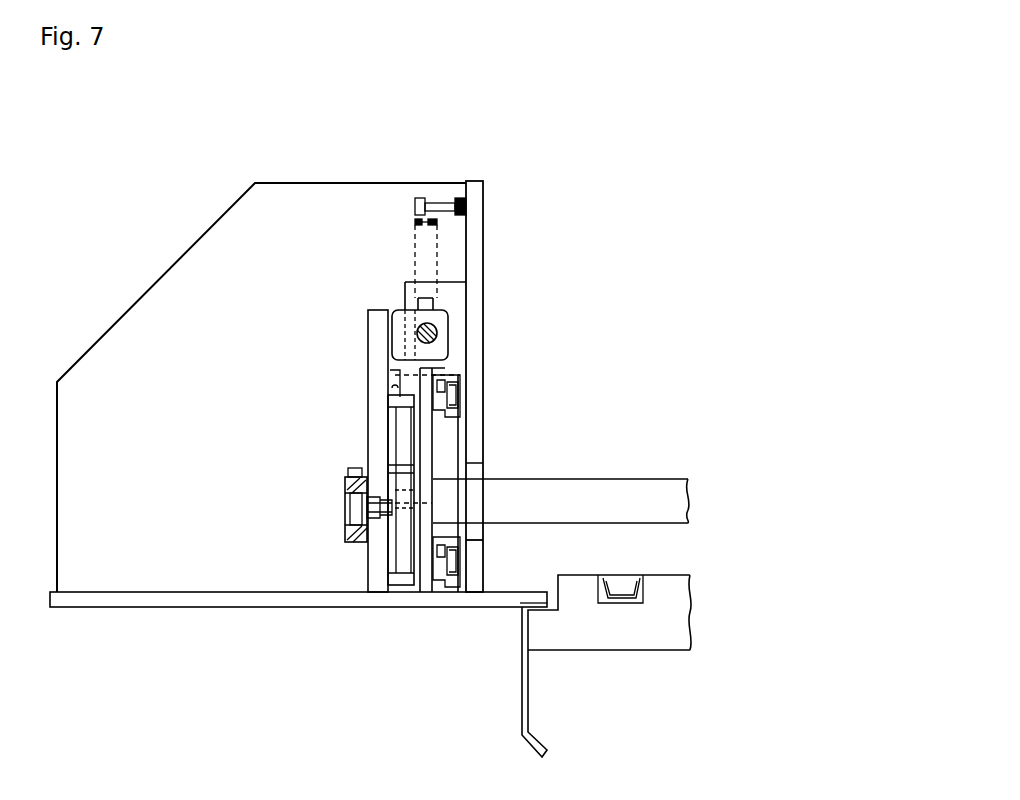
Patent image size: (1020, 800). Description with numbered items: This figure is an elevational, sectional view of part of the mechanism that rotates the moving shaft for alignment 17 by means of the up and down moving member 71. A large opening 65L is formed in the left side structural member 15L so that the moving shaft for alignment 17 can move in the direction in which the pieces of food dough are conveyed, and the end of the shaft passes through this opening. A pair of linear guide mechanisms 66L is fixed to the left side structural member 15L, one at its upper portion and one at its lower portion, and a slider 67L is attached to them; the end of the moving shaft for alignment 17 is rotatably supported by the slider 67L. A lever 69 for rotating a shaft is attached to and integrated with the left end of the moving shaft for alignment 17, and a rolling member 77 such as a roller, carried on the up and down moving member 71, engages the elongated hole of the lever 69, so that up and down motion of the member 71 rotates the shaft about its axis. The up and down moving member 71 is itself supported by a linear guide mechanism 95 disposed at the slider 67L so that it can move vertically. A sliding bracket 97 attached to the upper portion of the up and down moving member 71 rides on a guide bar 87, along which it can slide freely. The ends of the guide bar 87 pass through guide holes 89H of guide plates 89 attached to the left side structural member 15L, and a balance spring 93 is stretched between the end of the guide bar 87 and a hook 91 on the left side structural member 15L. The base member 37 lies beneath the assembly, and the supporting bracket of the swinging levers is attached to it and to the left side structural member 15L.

The left side structural member 15L is at (484, 210).
The moving shaft for alignment 17 is at (638, 496).
The base member 37 is at (297, 604).
The large opening 65L is at (470, 542).
The linear guide mechanisms 66L is at (448, 420).
The slider 67L is at (425, 596).
The lever for rotating a shaft 69 is at (343, 487).
The up and down moving member 71 is at (376, 356).
The rolling member 77 is at (347, 510).
The guide bar 87 is at (438, 333).
The guide plate 89 is at (455, 295).
The guide hole 89H is at (414, 274).
The hook 91 is at (441, 198).
The balance spring 93 is at (414, 224).
The linear guide mechanism 95 is at (382, 443).
The sliding bracket 97 is at (395, 314).